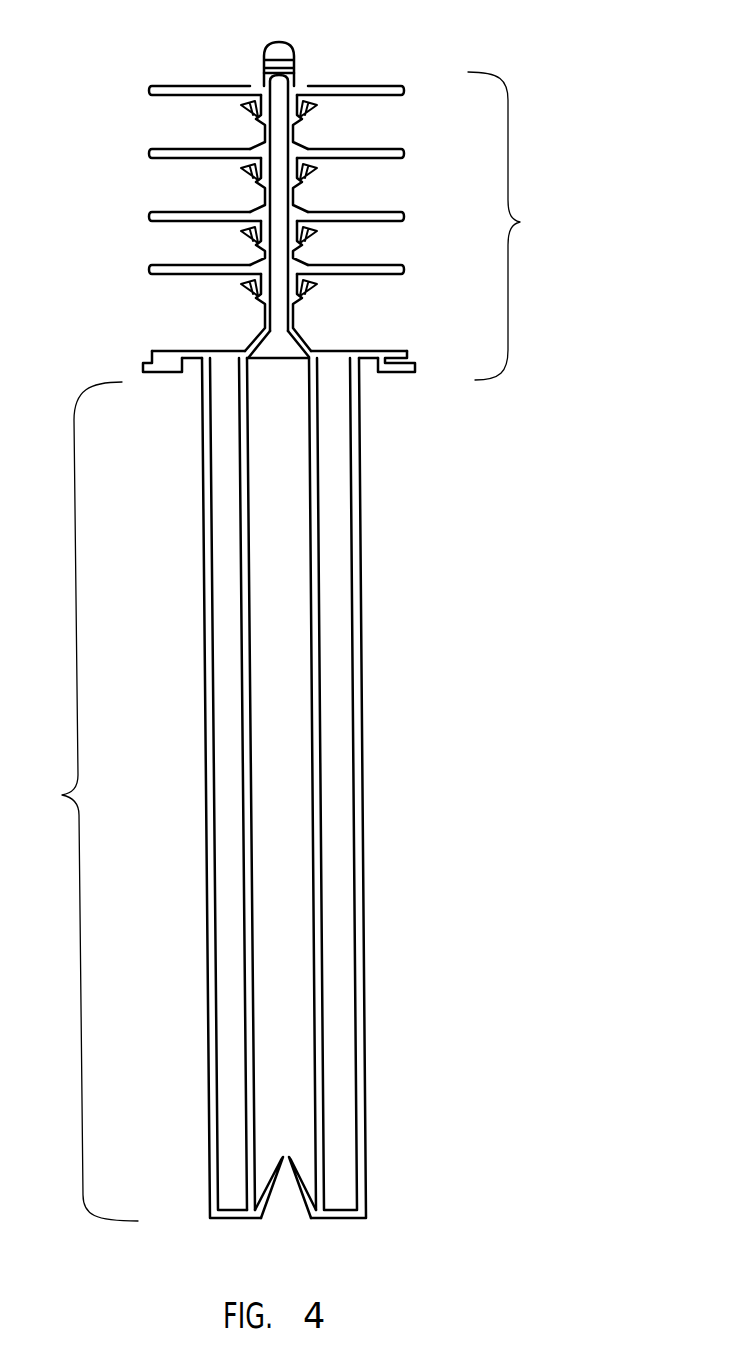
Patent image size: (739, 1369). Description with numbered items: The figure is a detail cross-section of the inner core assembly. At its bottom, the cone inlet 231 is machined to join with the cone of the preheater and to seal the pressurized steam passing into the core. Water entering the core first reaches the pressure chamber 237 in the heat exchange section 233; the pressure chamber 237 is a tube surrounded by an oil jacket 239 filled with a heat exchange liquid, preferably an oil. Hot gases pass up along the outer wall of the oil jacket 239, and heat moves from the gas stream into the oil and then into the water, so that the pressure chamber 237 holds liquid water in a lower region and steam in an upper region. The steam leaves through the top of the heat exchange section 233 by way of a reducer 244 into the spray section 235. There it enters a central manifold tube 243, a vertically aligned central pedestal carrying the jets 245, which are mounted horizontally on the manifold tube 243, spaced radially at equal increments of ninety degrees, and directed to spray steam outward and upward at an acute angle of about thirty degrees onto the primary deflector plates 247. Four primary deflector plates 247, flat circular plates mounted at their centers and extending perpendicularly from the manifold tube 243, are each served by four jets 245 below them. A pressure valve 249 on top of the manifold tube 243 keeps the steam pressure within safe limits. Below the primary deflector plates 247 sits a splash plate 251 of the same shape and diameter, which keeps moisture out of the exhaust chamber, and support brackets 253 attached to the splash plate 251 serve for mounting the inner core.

The cone inlet 231 is at (307, 1193).
The heat exchange section 233 is at (141, 789).
The spray section 235 is at (516, 226).
The pressure chamber 237 is at (283, 777).
The oil jacket 239 is at (345, 1002).
The central manifold tube 243 is at (279, 143).
The reducer 244 is at (272, 351).
The jets 245 is at (243, 107).
The primary deflector plates 247 is at (187, 211).
The pressure valve 249 is at (285, 43).
The splash plate 251 is at (368, 358).
The support brackets 253 is at (160, 372).